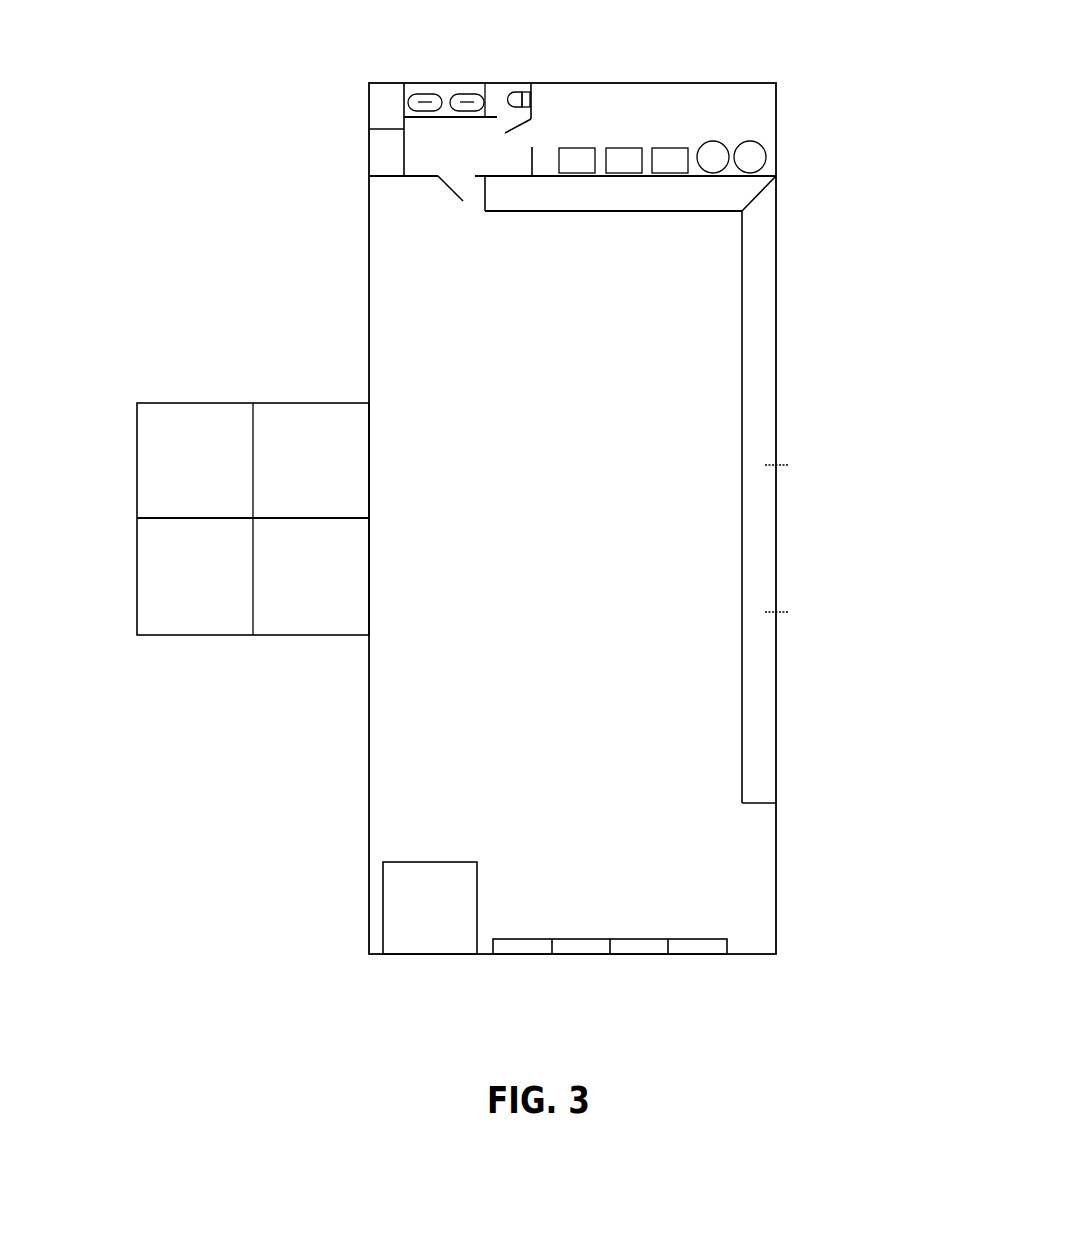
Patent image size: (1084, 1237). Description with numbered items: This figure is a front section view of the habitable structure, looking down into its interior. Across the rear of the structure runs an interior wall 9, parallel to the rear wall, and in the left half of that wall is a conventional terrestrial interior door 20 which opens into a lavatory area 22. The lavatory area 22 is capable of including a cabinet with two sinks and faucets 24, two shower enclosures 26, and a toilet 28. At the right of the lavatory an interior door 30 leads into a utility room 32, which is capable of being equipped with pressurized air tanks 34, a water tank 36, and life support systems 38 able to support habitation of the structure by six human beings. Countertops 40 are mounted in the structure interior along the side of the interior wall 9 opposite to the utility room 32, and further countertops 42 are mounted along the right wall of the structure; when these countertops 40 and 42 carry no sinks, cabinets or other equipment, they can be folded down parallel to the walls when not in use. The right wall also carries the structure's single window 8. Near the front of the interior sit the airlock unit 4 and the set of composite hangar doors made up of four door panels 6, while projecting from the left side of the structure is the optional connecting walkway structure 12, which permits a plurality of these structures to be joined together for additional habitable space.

The airlock unit 4 is at (430, 936).
The door panels 6 is at (571, 947).
The window 8 is at (777, 523).
The interior wall 9 is at (542, 176).
The connecting walkway structure 12 is at (183, 600).
The interior door 20 is at (452, 190).
The lavatory area 22 is at (430, 150).
The cabinet with two sinks and faucets 24 is at (448, 90).
The shower enclosures 26 is at (382, 146).
The toilet 28 is at (519, 90).
The interior door at the right of the lavatory 30 is at (513, 125).
The utility room 32 is at (623, 115).
The pressurized air tanks 34 is at (717, 150).
The water tank 36 is at (753, 152).
The life support systems 38 is at (672, 157).
The countertops 40 is at (668, 198).
The countertops 42 is at (757, 415).